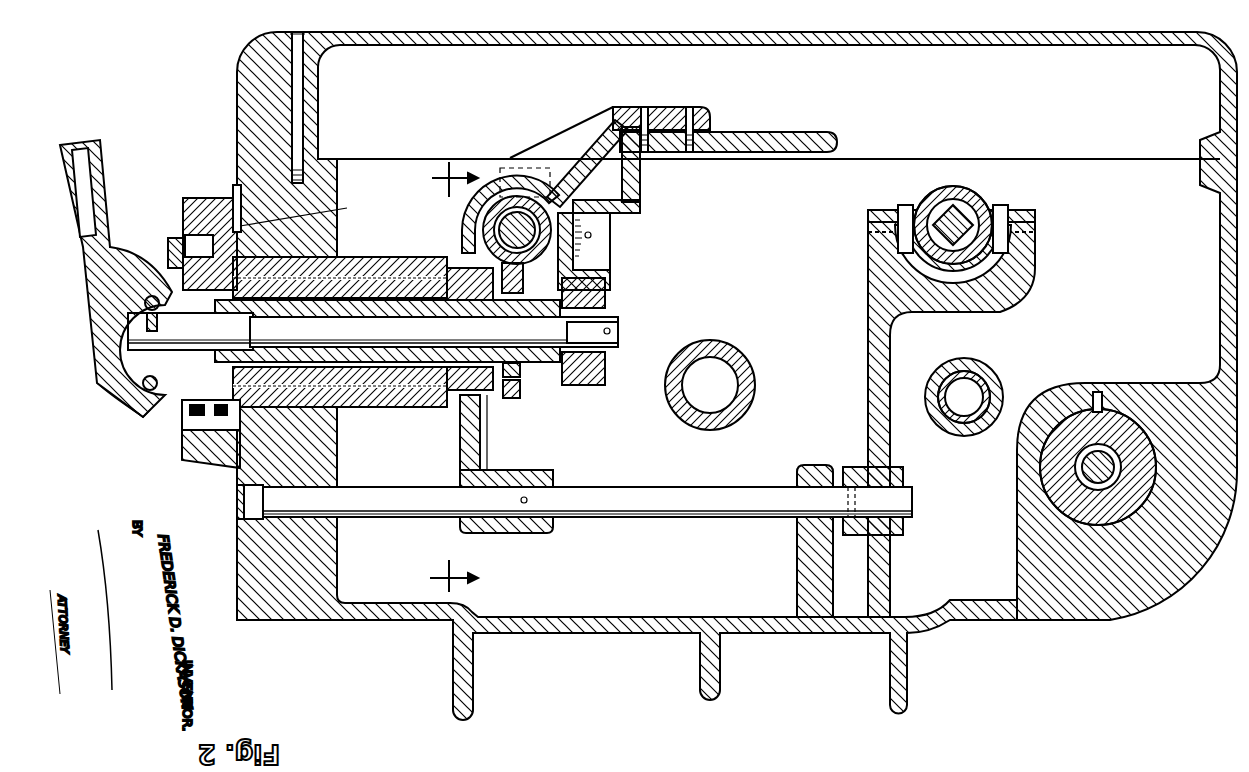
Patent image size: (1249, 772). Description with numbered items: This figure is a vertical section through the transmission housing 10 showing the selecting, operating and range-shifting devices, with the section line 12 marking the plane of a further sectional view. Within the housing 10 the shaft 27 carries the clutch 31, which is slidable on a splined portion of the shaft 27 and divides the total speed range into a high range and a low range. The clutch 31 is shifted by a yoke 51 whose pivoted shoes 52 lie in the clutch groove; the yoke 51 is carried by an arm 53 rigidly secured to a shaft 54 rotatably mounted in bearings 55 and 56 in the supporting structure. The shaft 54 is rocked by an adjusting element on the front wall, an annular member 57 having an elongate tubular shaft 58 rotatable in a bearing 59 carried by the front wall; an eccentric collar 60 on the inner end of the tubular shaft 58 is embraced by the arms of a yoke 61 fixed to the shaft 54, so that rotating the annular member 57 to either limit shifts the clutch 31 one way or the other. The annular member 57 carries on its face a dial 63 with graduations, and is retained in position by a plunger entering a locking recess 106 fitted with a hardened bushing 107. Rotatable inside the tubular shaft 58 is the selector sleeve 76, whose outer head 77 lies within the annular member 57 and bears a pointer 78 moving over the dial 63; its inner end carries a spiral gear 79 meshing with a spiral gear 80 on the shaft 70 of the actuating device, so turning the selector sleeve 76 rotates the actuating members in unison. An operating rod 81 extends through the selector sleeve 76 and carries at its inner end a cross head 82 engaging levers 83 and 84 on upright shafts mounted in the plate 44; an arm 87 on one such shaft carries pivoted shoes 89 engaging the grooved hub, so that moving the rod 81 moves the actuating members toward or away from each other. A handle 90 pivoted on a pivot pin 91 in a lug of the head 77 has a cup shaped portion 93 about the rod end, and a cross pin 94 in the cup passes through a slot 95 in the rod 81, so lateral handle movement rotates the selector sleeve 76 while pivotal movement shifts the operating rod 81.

The housing 10 is at (337, 572).
The section line 12- 12 is at (438, 377).
The shaft 27 is at (966, 200).
The clutch 31 is at (968, 205).
The supporting member or plate 44 is at (765, 140).
The yoke 51 is at (978, 305).
The pivoted shoes 52 is at (904, 205).
The arm 53 is at (868, 378).
The shaft 54 is at (700, 492).
The bearing 55 is at (797, 540).
The bearing 56 is at (237, 502).
The annular member 57 is at (222, 198).
The tubular portion or shaft 58 is at (345, 283).
The bearing 59 is at (395, 404).
The eccentric collar 60 is at (500, 380).
The yoke 61 is at (488, 440).
The dial 63 is at (183, 214).
The shaft 70 is at (500, 233).
The selecting member 76 is at (250, 336).
The head 77 is at (190, 390).
The pointer 78 is at (168, 243).
The spiral gear 79 is at (520, 390).
The spiral gear 80 is at (524, 278).
The operating member 81 is at (571, 329).
The cross head 82 is at (610, 320).
The lever 83 is at (605, 290).
The lever 84 is at (605, 372).
The arm 87 is at (612, 185).
The pivoted shoes 89 is at (462, 216).
The handle 90 is at (93, 303).
The pivot pin 91 is at (128, 405).
The cup shaped portion 93 is at (128, 365).
The cross pin 94 is at (152, 296).
The slot 95 is at (158, 325).
The locking recess 106 is at (233, 185).
The hardened bushing 107 is at (308, 212).